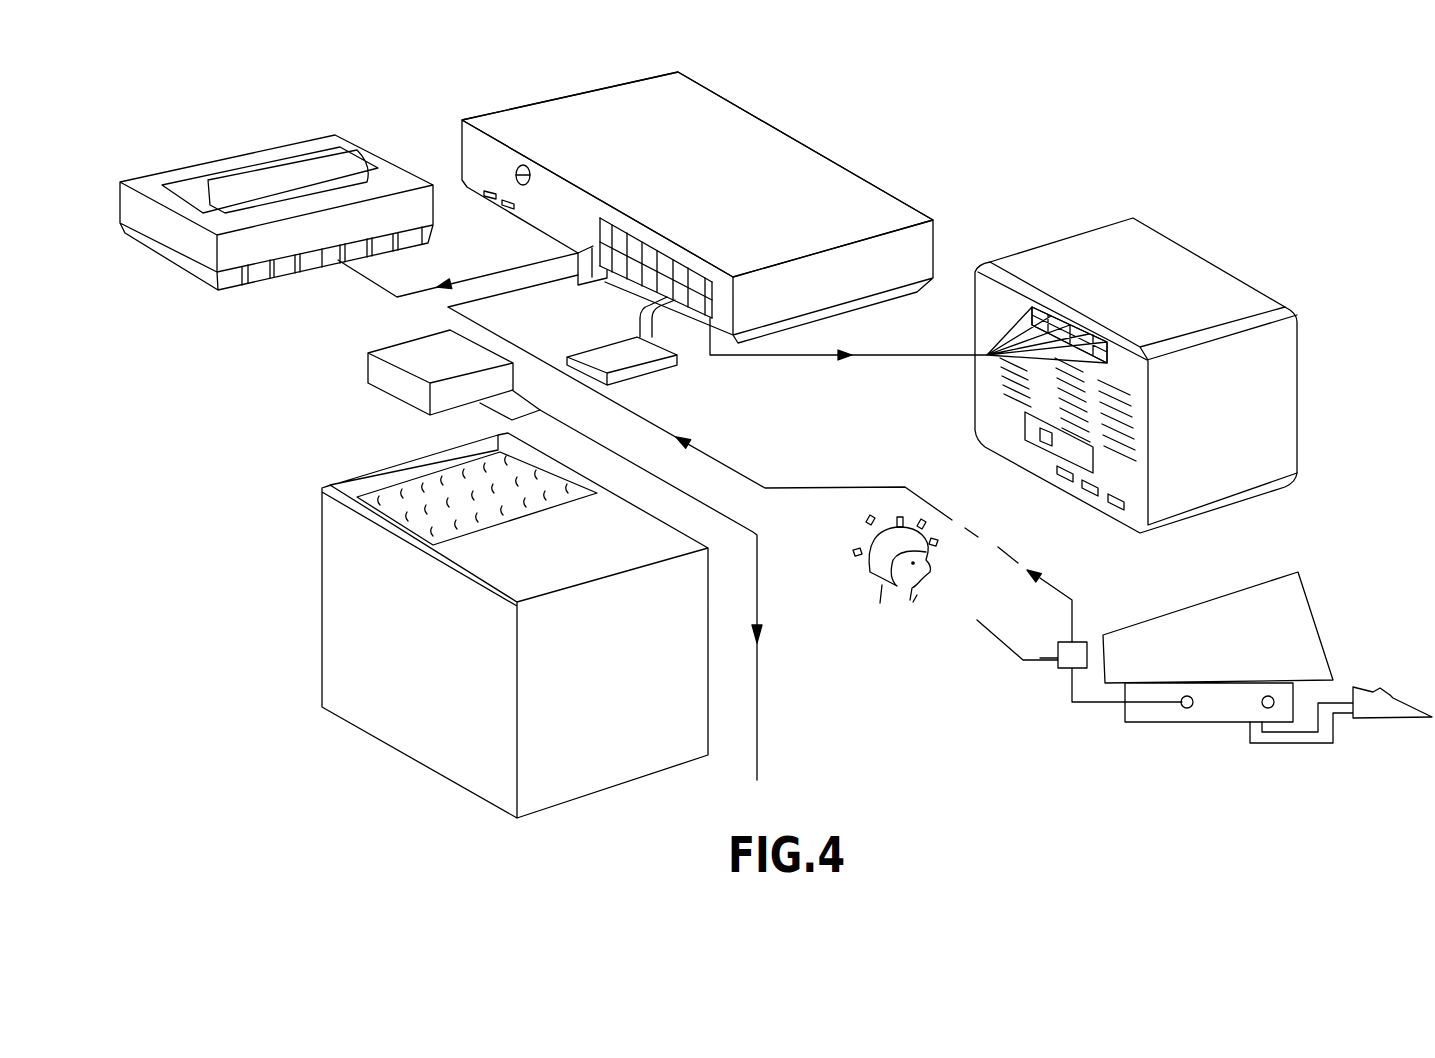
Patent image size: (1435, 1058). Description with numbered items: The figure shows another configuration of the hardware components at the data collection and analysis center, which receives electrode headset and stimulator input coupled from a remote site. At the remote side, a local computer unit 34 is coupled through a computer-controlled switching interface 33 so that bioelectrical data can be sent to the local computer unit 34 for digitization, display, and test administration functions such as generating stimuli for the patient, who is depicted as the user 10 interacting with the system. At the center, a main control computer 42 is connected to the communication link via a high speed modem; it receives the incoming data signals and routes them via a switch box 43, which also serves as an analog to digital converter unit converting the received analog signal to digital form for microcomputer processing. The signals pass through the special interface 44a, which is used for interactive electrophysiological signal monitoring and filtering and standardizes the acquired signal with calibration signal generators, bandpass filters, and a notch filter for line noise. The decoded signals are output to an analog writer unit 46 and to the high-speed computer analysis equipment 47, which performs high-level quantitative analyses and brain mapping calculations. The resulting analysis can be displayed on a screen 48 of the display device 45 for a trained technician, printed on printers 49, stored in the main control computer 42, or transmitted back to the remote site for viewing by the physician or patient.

The user 10 is at (897, 590).
The computer-controlled switching interface 33 is at (1080, 640).
The local computer unit 34 is at (1313, 603).
The main control computer 42 is at (858, 175).
The high-speed computer analysis equipment 47 is at (697, 174).
The switch box 43 is at (643, 378).
The interface 44a is at (380, 392).
The display device 45 is at (1260, 290).
The screen 48 is at (1069, 335).
The analog writer unit 46 is at (377, 740).
The printers 49 is at (342, 133).